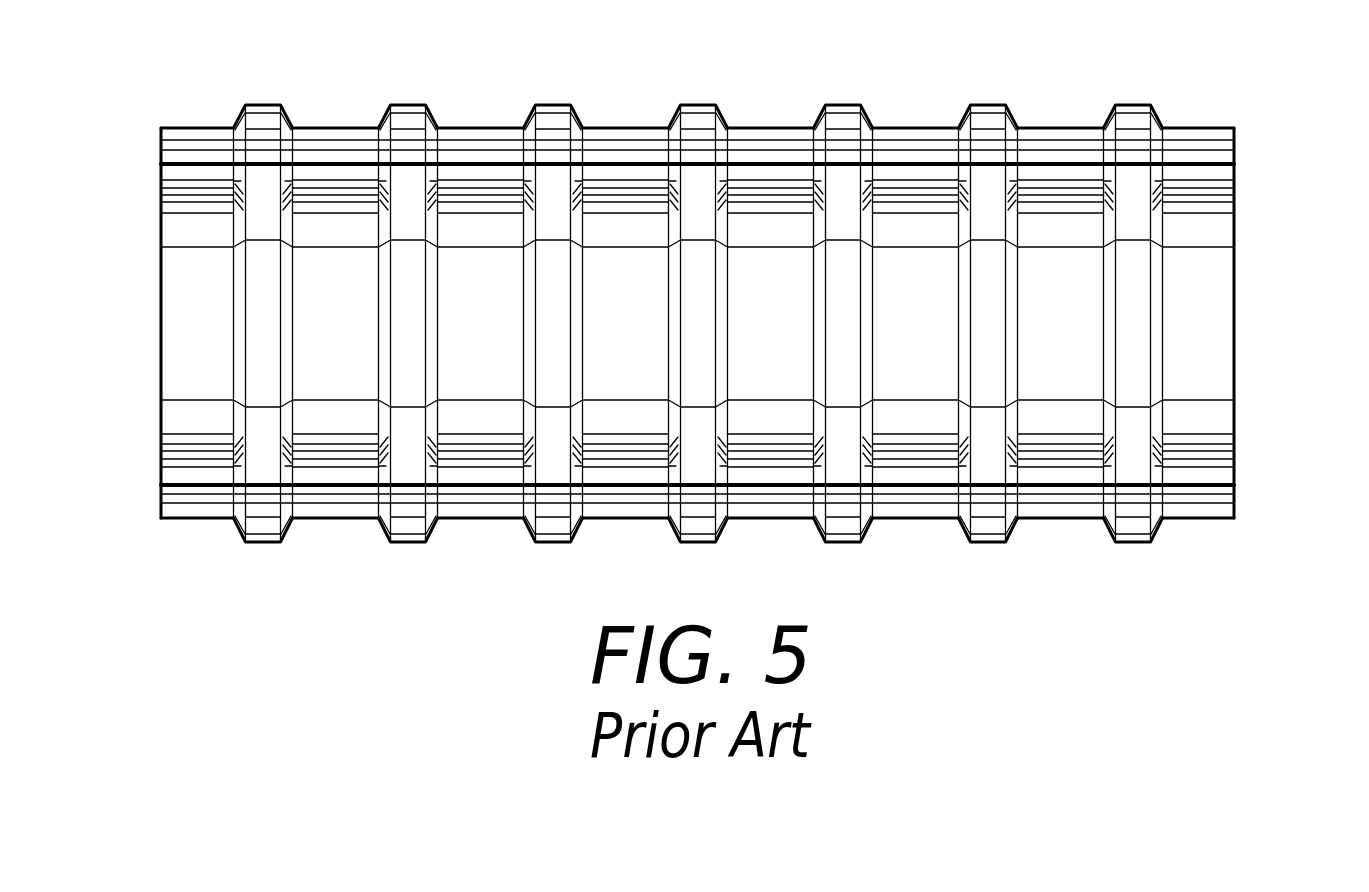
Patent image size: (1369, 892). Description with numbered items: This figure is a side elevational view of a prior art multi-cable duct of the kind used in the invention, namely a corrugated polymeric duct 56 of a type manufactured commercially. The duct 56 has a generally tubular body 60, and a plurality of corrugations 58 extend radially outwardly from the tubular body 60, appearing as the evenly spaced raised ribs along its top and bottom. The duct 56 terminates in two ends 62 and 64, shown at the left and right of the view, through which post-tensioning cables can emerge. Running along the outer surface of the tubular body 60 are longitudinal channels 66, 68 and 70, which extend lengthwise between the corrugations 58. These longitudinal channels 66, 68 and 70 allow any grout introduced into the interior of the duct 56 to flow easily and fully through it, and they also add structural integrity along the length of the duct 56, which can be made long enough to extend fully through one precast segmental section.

The corrugated polymeric duct 56 is at (907, 130).
The corrugations 58 is at (548, 105).
The tubular body 60 is at (912, 512).
The end 62 is at (158, 358).
The end 64 is at (1235, 355).
The longitudinal channel 66 is at (213, 170).
The longitudinal channel 68 is at (1190, 478).
The longitudinal channel 70 is at (483, 133).